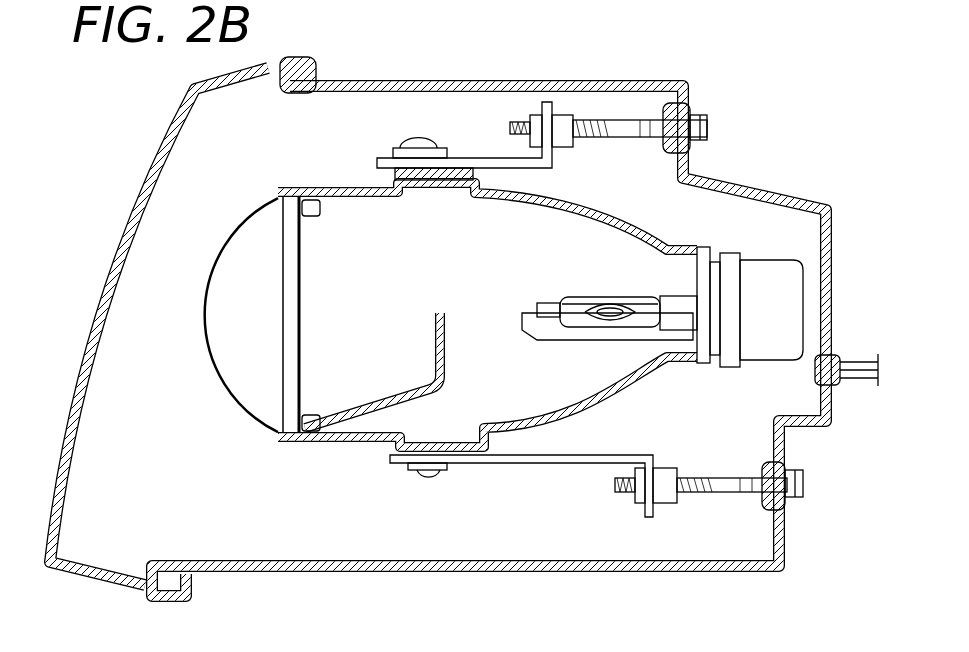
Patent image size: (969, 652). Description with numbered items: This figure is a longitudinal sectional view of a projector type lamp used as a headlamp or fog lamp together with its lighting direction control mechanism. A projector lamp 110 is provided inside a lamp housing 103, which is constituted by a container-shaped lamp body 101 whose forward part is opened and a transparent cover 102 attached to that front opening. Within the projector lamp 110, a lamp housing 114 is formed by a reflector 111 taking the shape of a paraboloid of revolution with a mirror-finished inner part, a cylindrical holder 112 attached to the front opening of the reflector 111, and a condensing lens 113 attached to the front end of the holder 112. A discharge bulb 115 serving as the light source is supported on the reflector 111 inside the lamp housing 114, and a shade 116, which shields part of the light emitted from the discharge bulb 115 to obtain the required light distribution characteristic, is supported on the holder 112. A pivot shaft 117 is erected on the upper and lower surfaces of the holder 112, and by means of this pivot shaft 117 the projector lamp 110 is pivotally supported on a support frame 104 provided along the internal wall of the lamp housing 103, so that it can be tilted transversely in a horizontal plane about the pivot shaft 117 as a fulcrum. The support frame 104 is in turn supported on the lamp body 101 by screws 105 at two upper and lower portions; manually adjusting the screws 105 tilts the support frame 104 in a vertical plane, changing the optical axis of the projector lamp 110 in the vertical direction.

The lamp body 101 is at (765, 195).
The transparent cover 102 is at (138, 163).
The lamp housing 103 is at (622, 548).
The support frame 104 is at (500, 157).
The screws 105 is at (710, 128).
The projector lamp 110 is at (310, 160).
The reflector 111 is at (605, 210).
The holder 112 is at (345, 440).
The condensing lens 113 is at (242, 392).
The lamp housing 114 is at (320, 250).
The discharge bulb 115 is at (606, 315).
The shade 116 is at (445, 370).
The pivot shaft 117 is at (425, 140).